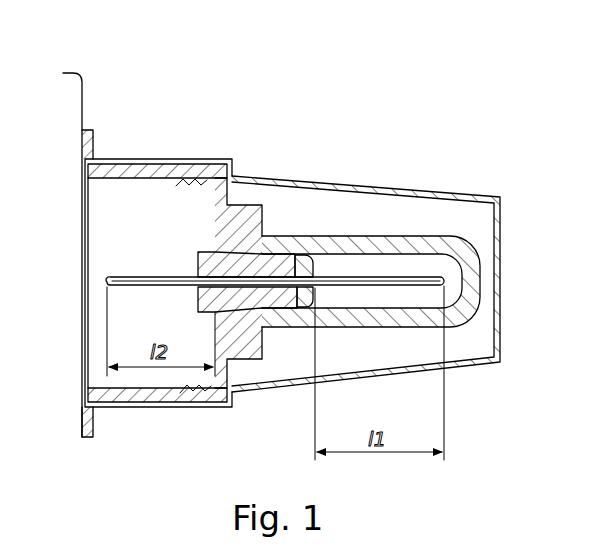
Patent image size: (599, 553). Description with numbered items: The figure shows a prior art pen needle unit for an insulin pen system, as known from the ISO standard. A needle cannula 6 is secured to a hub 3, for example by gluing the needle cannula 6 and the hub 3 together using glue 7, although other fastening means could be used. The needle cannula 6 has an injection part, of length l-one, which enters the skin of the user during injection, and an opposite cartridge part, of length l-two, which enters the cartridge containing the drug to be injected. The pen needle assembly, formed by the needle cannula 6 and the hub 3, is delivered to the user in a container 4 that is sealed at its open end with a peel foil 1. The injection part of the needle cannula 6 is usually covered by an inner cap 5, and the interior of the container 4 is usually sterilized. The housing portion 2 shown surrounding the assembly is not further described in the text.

The peel foil 1 is at (86, 77).
The housing 2 is at (178, 190).
The hub 3 is at (237, 223).
The container 4 is at (298, 181).
The inner cap 5 is at (353, 245).
The needle cannula 6 is at (407, 280).
The glue 7 is at (302, 302).